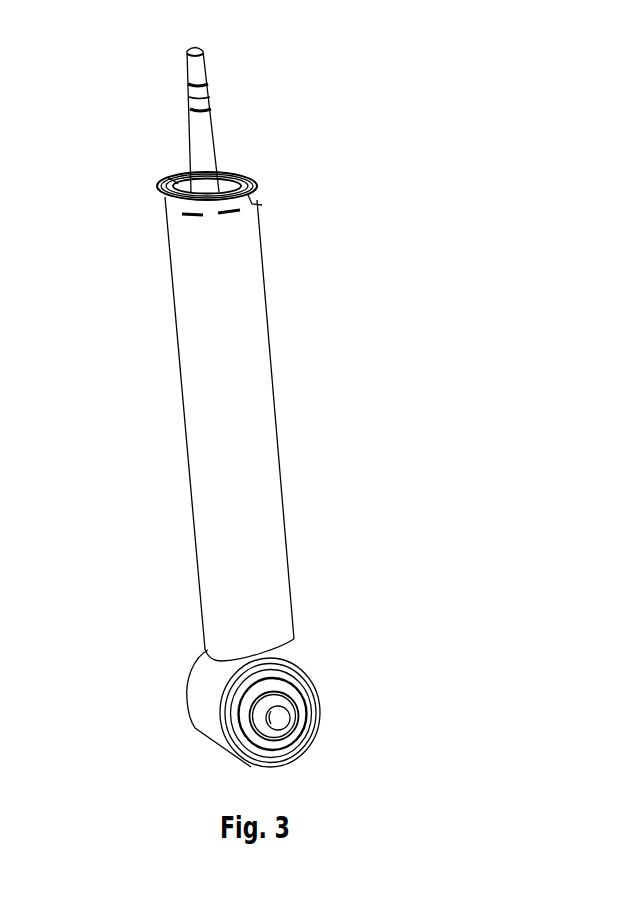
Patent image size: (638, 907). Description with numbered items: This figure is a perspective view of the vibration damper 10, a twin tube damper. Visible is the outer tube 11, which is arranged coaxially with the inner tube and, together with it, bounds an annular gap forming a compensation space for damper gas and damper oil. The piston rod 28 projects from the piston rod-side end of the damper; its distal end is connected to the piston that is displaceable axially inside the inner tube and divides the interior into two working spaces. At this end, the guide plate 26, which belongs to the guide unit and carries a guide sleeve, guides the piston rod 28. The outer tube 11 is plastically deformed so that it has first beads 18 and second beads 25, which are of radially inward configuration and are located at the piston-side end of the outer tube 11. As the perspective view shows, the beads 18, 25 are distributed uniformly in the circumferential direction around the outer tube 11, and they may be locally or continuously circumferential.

The vibration damper 10 is at (419, 165).
The outer tube 11 is at (275, 450).
The first bead 18 is at (250, 198).
The second bead 25 is at (178, 183).
The guide plate 26 is at (250, 173).
The piston rod 28 is at (212, 120).